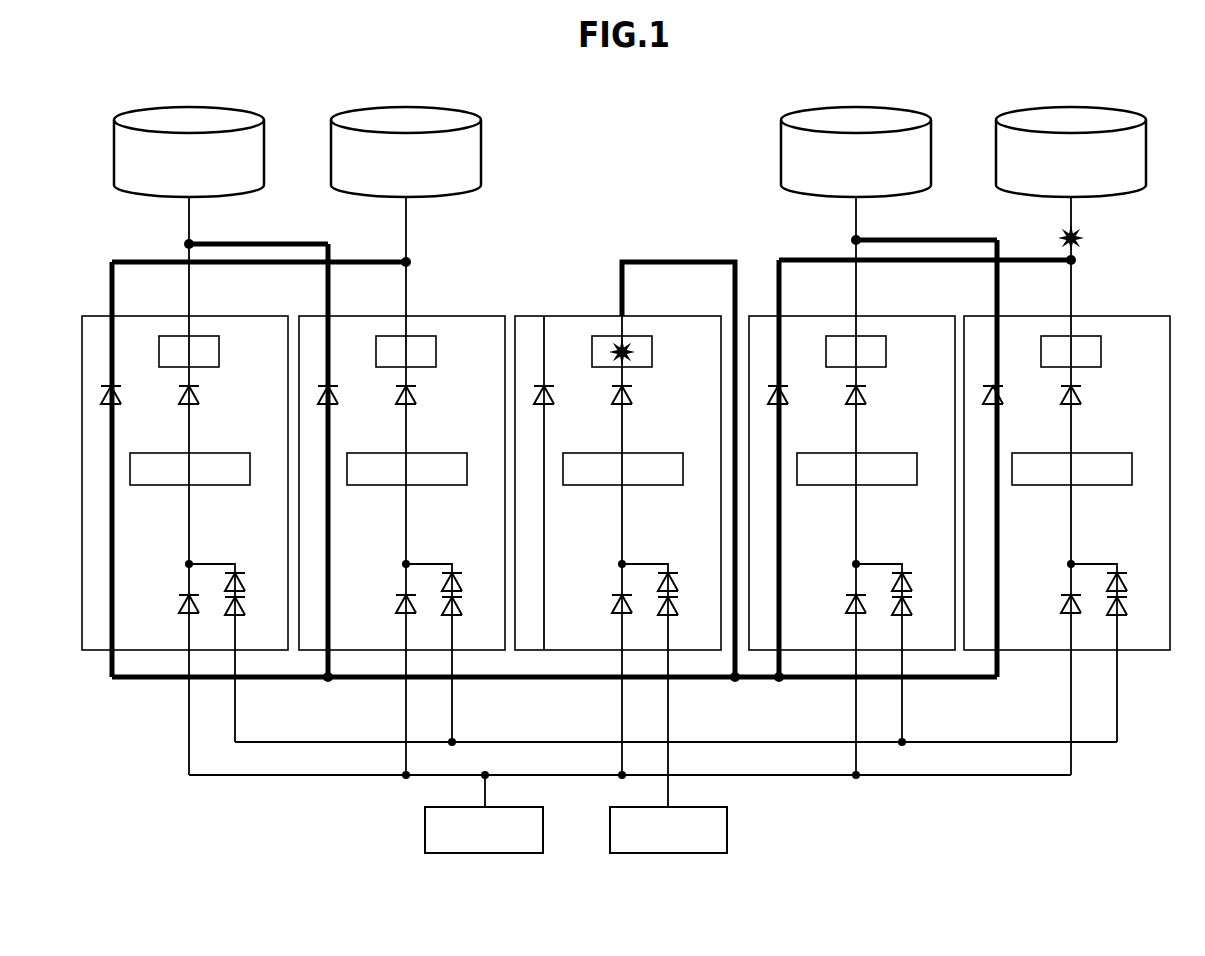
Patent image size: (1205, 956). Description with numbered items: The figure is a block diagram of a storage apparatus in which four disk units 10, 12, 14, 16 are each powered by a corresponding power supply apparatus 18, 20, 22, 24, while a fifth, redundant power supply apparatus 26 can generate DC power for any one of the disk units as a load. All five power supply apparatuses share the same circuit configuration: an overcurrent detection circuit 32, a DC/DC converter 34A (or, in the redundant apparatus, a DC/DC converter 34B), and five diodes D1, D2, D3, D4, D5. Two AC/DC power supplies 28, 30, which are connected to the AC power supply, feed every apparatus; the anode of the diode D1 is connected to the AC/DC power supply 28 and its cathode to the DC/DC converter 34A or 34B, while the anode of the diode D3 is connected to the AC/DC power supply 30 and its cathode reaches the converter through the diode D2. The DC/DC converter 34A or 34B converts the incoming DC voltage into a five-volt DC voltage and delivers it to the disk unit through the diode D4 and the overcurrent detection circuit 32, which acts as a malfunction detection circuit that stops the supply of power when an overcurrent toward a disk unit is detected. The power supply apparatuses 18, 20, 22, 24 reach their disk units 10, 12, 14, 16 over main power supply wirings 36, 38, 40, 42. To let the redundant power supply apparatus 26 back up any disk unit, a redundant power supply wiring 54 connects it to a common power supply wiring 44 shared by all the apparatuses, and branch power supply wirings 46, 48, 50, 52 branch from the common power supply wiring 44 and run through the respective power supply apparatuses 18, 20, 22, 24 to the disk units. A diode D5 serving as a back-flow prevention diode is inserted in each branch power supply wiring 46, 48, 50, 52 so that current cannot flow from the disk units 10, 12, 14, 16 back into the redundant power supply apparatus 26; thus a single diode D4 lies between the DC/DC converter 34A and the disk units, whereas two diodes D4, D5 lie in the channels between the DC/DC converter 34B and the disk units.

The disk unit 10 is at (217, 106).
The disk unit 12 is at (434, 106).
The disk unit 14 is at (884, 106).
The disk unit 16 is at (1099, 106).
The power supply apparatus 18 is at (237, 316).
The power supply apparatus 20 is at (454, 316).
The power supply apparatus 22 is at (904, 316).
The power supply apparatus 24 is at (1119, 316).
The redundant power supply apparatus 26 is at (670, 316).
The AC/DC power supply 28 is at (422, 834).
The AC/DC power supply 30 is at (729, 834).
The overcurrent detection circuit 32 is at (220, 352).
The DC/DC converter 34A is at (147, 488).
The DC/DC converter 34B is at (580, 488).
The main power supply wiring 36 is at (188, 296).
The main power supply wiring 38 is at (408, 229).
The main power supply wiring 40 is at (858, 222).
The main power supply wiring 42 is at (1073, 220).
The common power supply wiring 44 is at (704, 681).
The branch power supply wiring 46 is at (111, 565).
The branch power supply wiring 48 is at (328, 565).
The branch power supply wiring 50 is at (778, 565).
The branch power supply wiring 52 is at (993, 565).
The redundant power supply wiring 54 is at (668, 262).
The diode D1 is at (178, 603).
The diode D2 is at (241, 576).
The diode D3 is at (245, 609).
The diode D4 is at (200, 393).
The diode D5 is at (121, 398).